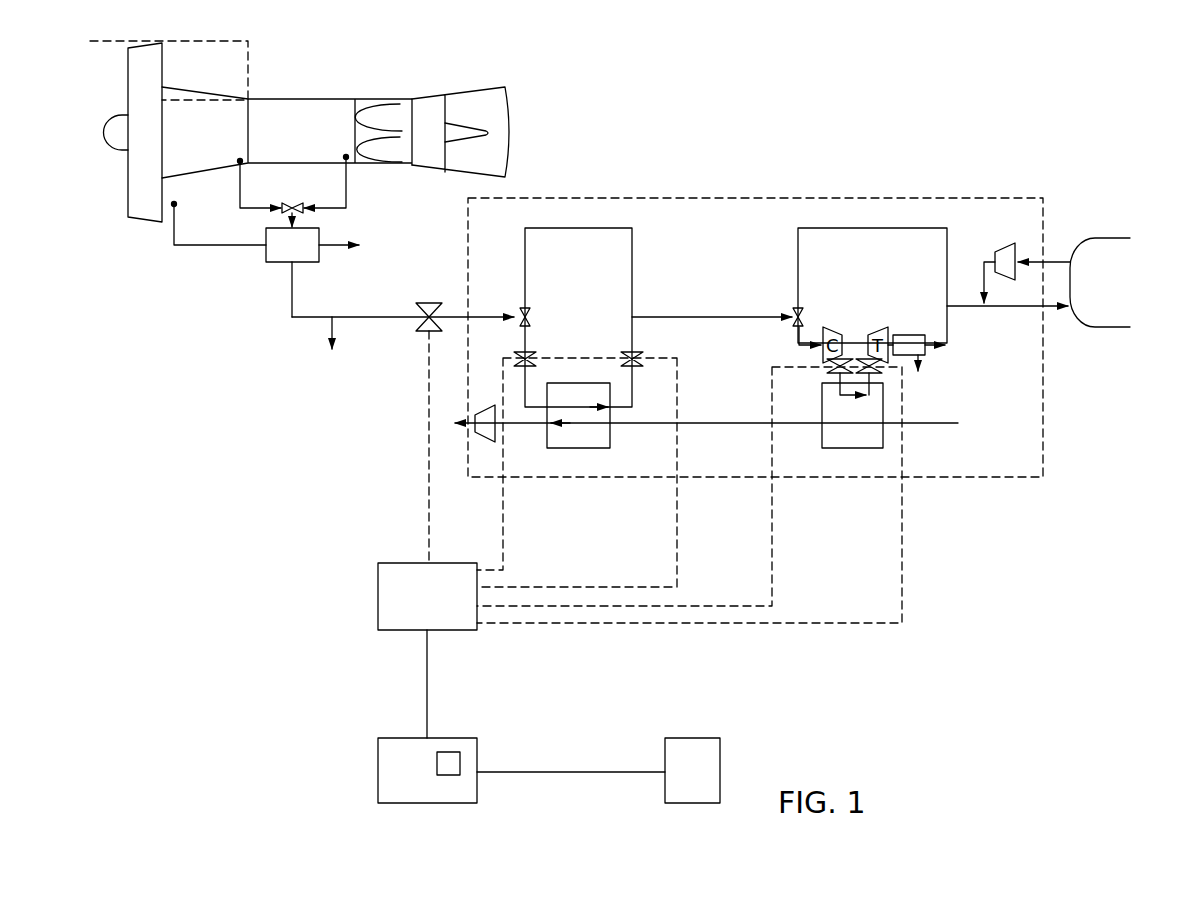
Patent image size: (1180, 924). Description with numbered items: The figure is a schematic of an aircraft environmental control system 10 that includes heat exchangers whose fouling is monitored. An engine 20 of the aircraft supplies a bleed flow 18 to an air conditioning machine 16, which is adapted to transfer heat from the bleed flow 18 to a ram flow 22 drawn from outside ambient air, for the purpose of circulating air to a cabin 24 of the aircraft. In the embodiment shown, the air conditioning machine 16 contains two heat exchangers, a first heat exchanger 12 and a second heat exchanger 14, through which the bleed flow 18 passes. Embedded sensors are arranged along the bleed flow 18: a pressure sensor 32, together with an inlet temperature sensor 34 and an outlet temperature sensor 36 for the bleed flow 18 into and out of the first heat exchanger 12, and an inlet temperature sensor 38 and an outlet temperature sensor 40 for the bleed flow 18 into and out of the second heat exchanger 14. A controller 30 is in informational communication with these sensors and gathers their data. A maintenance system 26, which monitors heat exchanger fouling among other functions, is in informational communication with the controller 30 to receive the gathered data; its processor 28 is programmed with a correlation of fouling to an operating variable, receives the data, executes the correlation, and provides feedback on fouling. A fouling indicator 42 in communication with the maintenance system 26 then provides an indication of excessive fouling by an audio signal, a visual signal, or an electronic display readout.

The environmental control system 10 is at (1092, 116).
The first heat exchanger 12 is at (610, 437).
The second heat exchanger 14 is at (860, 448).
The air conditioning machine 16 is at (805, 197).
The bleed flow 18 is at (343, 316).
The engine 20 is at (427, 79).
The ram flow 22 is at (943, 423).
The cabin 24 is at (1118, 238).
The maintenance system 26 is at (455, 738).
The processor 28 is at (462, 765).
The controller 30 is at (455, 563).
The pressure sensor 32 is at (428, 302).
The inlet temperature sensor 34 is at (532, 352).
The outlet temperature sensor 36 is at (627, 352).
The inlet temperature sensor 38 is at (843, 359).
The outlet temperature sensor 40 is at (865, 359).
The fouling indicator 42 is at (705, 738).